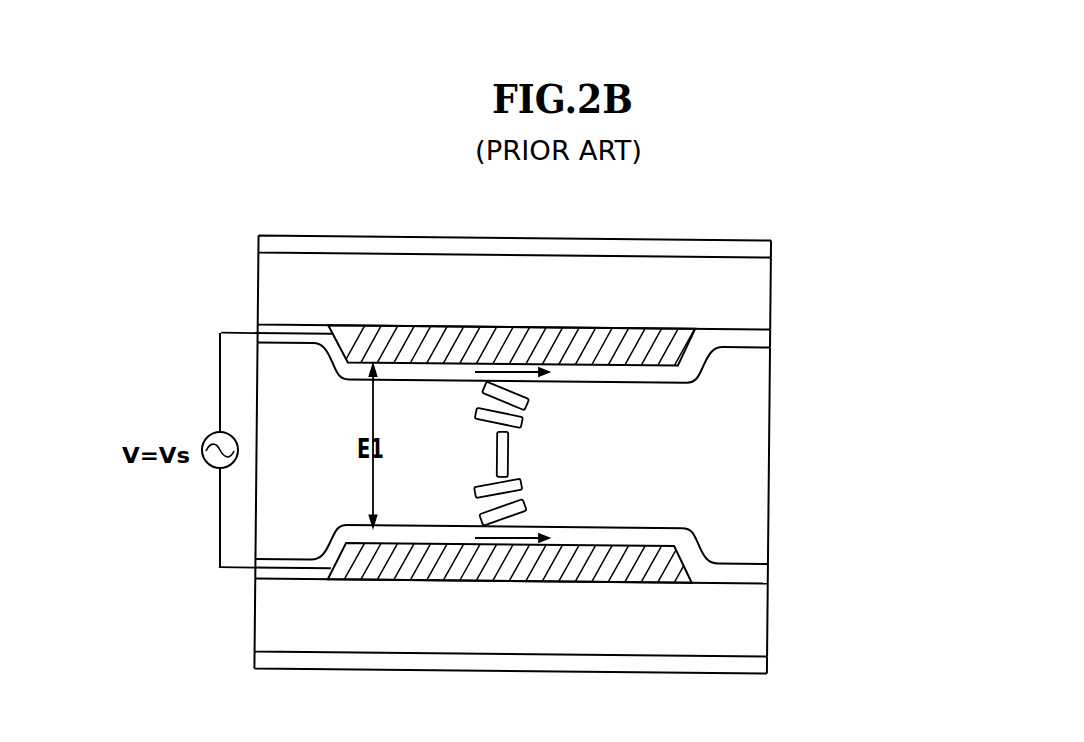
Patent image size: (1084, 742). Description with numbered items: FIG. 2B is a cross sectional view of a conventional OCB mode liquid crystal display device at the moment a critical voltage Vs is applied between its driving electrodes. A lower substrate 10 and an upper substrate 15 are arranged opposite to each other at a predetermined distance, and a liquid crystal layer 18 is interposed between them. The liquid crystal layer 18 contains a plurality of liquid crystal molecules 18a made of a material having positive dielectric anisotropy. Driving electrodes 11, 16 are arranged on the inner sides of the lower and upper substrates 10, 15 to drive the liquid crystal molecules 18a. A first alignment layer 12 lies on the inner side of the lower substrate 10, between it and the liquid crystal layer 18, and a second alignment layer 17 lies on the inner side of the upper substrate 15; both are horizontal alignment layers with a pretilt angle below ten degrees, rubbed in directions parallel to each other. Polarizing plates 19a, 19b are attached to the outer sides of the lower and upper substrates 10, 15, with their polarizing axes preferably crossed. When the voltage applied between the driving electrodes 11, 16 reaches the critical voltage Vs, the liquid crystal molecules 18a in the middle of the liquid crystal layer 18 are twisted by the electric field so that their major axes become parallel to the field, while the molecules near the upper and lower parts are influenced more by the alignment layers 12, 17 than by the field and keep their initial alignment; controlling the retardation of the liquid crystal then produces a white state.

The lower substrate 10 is at (756, 623).
The driving electrode 11 is at (670, 567).
The first alignment layer 12 is at (756, 575).
The upper substrate 15 is at (756, 293).
The driving electrode 16 is at (672, 342).
The second alignment layer 17 is at (756, 338).
The liquid crystal layer 18 is at (756, 460).
The liquid crystal molecules 18a is at (523, 421).
The polarizing plate 19a is at (756, 667).
The polarizing plate 19b is at (756, 248).